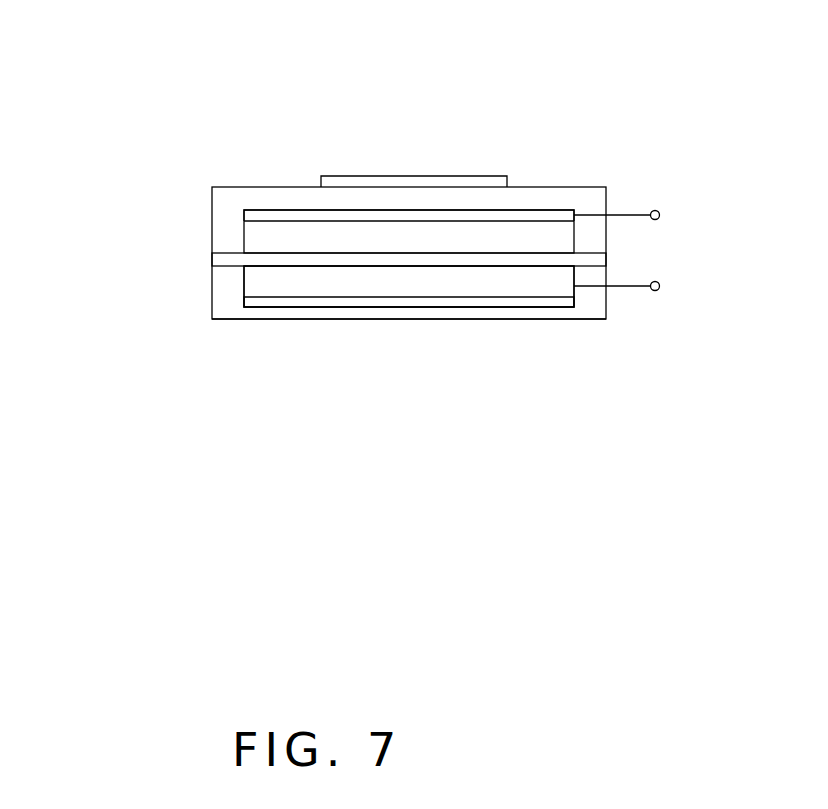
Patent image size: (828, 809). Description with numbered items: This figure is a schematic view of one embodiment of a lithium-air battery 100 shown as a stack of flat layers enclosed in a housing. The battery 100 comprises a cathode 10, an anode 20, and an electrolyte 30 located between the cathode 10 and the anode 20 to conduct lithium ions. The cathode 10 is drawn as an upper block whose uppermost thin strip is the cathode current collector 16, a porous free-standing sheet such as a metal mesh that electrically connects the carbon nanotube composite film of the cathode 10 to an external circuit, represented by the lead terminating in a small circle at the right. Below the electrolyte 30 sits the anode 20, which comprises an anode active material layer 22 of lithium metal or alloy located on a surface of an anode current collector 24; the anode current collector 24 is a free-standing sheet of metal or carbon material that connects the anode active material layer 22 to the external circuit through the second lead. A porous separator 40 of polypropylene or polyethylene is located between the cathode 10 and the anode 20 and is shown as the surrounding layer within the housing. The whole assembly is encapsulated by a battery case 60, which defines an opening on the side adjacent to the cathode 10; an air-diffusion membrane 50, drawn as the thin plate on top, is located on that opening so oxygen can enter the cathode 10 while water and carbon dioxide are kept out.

The lithium-air battery 100 is at (437, 42).
The separator 40 is at (218, 203).
The air-diffusion membrane 50 is at (450, 182).
The cathode current collector 16 is at (253, 213).
The cathode 10 is at (258, 237).
The electrolyte 30 is at (220, 259).
The anode 20 is at (121, 280).
The anode active material layer 22 is at (257, 281).
The anode current collector 24 is at (252, 301).
The battery case 60 is at (333, 319).